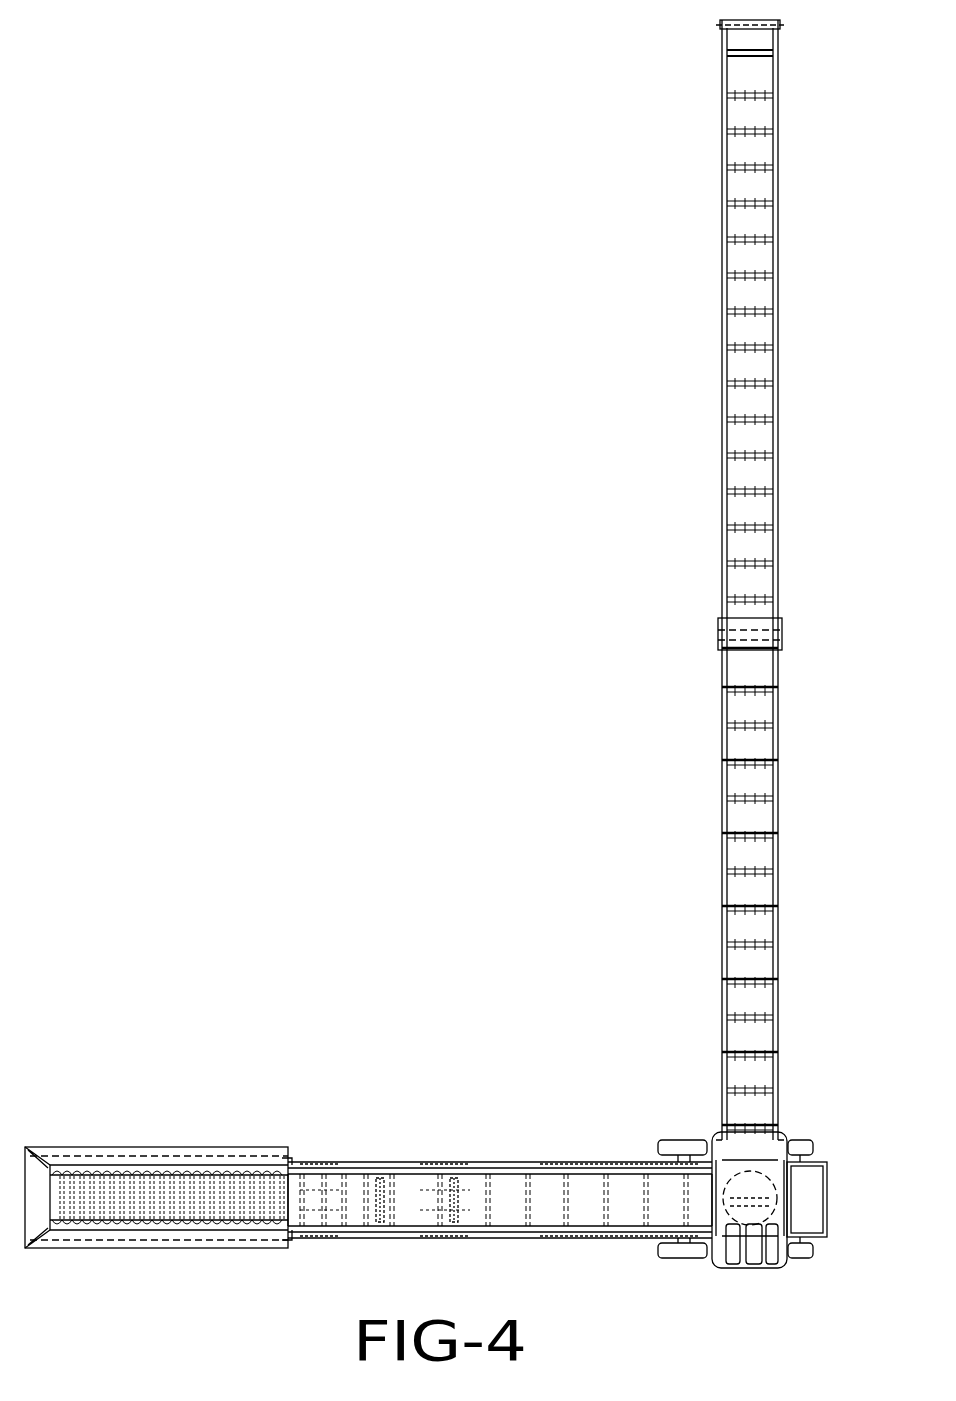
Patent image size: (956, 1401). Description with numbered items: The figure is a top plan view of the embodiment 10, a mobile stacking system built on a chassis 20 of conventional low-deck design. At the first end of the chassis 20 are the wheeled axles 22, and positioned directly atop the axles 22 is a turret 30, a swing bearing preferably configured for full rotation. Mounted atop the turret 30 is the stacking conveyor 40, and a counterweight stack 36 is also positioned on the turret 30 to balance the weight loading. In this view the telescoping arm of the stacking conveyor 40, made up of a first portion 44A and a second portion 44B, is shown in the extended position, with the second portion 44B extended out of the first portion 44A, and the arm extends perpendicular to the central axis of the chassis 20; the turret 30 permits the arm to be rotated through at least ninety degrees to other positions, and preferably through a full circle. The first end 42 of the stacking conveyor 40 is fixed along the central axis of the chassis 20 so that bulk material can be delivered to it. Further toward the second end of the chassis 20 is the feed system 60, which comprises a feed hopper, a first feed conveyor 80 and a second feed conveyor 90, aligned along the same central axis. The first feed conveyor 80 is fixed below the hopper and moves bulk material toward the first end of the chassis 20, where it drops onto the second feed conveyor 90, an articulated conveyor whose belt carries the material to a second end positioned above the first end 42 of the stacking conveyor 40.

The embodiment 10 is at (403, 762).
The chassis 20 is at (391, 1160).
The wheeled axle 22 is at (686, 1147).
The turret 30 is at (767, 1166).
The counterweight stack 36 is at (755, 1270).
The stacking conveyor 40 is at (720, 396).
The first end of stacking conveyor 42 is at (755, 1190).
The first portion of telescoping arm 44A is at (723, 672).
The second portion of telescoping arm 44B is at (723, 187).
The feed system 60 is at (90, 1147).
The first feed conveyor 80 is at (194, 1165).
The second feed conveyor 90 is at (484, 1168).